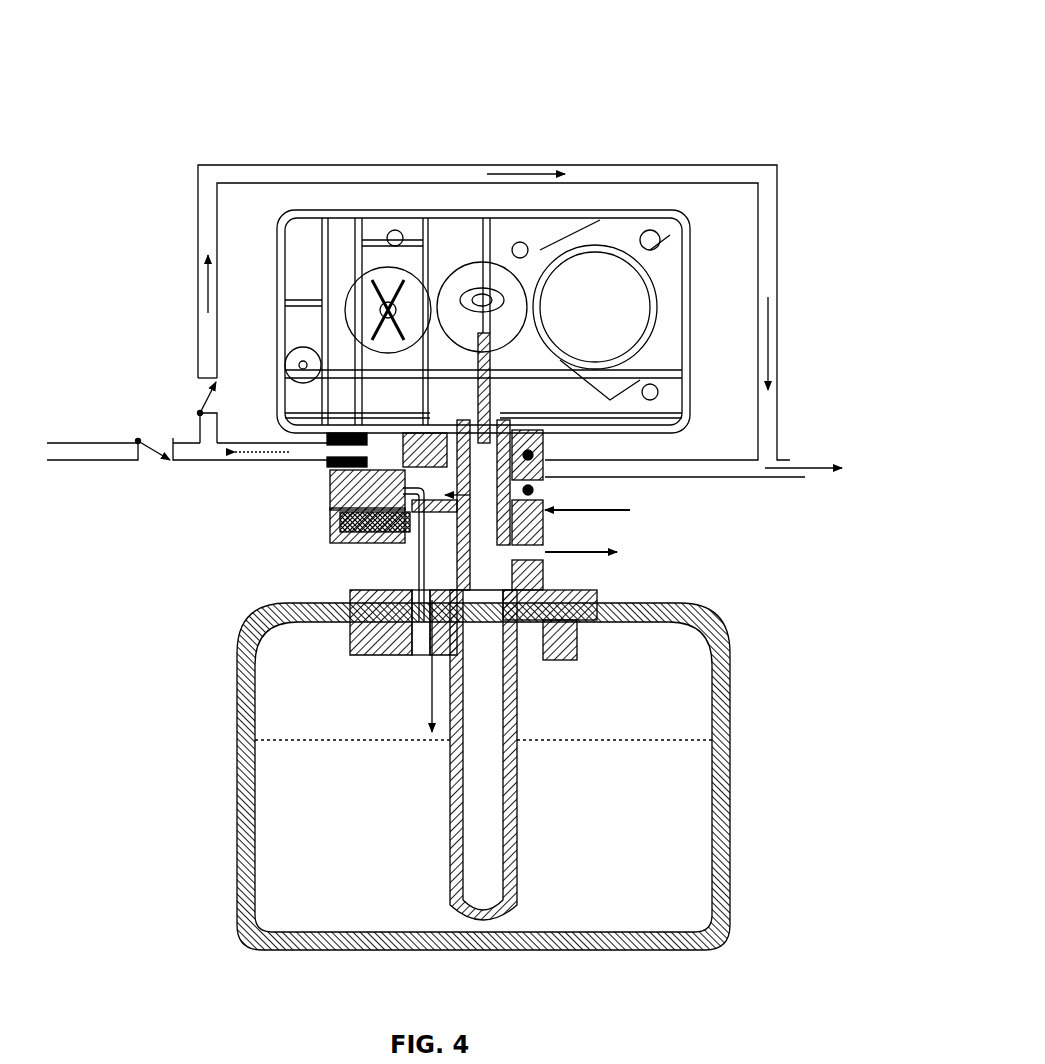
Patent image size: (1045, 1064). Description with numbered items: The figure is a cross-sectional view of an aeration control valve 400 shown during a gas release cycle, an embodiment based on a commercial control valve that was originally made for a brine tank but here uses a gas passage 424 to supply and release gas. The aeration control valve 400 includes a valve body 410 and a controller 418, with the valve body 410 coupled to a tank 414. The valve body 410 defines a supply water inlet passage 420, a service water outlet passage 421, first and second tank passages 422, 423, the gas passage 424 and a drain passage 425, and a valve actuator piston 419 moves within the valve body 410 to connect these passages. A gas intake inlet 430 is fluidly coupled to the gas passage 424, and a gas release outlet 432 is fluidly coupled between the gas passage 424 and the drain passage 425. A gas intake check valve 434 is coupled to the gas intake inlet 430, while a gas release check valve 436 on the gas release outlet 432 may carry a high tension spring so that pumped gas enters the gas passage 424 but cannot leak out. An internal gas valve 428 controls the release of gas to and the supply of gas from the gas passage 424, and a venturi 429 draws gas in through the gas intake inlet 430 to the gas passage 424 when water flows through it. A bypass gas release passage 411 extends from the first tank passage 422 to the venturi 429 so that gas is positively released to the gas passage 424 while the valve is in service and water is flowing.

The aeration control valve 400 is at (562, 100).
The valve body 410 is at (655, 528).
The bypass gas release passage 411 is at (405, 590).
The tank 414 is at (238, 688).
The controller 418 is at (276, 268).
The valve actuator piston 419 is at (412, 550).
The supply water inlet passage 420 is at (543, 565).
The service water outlet passage 421 is at (543, 522).
The first tank passage 422 is at (400, 642).
The second tank passage 423 is at (486, 617).
The gas passage 424 is at (312, 455).
The drain passage 425 is at (545, 468).
The internal gas valve 428 is at (345, 475).
The venturi 429 is at (372, 502).
The gas intake inlet 430 is at (100, 460).
The gas release outlet 432 is at (204, 337).
The gas intake check valve 434 is at (155, 460).
The gas release check valve 436 is at (198, 392).